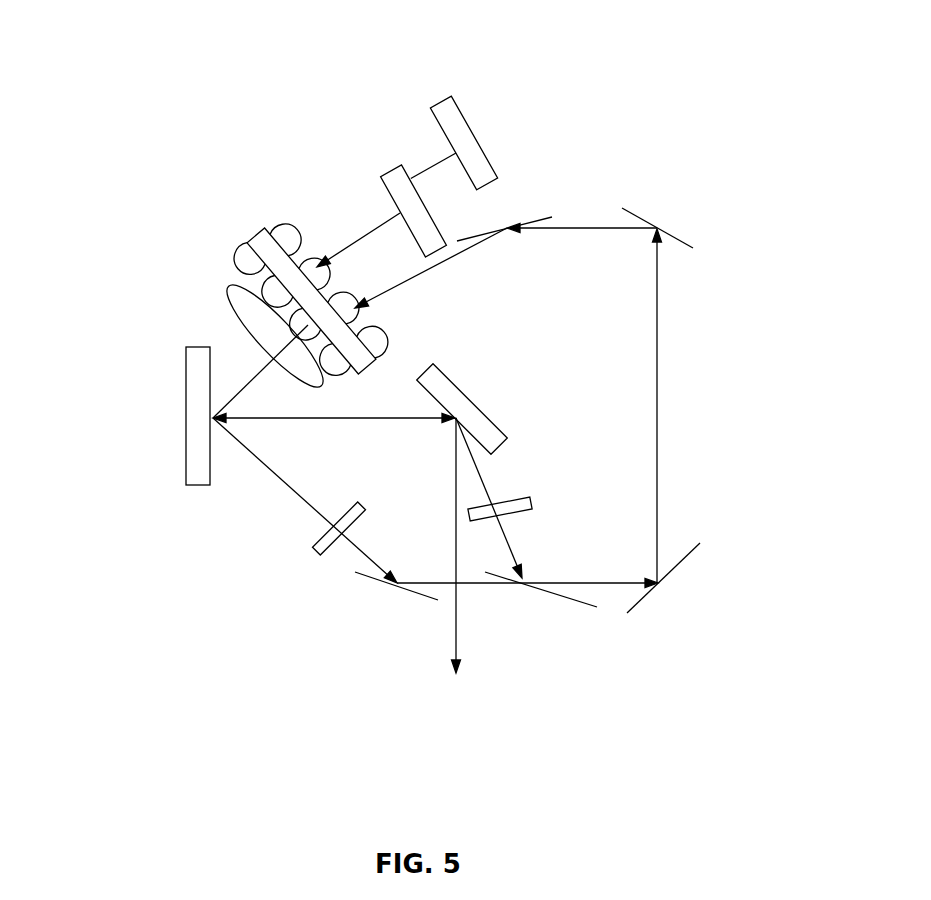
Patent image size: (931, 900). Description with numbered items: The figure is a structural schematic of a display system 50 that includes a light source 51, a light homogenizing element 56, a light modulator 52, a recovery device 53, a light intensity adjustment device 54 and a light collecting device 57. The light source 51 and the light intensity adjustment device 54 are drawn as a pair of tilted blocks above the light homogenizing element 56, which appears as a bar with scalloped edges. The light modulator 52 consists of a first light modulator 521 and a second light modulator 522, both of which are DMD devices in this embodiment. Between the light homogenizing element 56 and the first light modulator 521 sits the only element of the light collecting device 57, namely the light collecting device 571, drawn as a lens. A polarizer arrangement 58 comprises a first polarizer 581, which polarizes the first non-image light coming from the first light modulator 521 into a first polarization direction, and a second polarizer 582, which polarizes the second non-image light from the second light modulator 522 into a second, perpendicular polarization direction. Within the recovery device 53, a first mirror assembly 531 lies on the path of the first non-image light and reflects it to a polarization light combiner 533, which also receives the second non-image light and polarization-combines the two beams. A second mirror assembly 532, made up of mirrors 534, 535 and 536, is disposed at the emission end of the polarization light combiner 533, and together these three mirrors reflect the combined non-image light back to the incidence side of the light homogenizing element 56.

The display system 50 is at (447, 45).
The light source 51 is at (393, 170).
The light modulator 52 is at (95, 332).
The recovery device 53 is at (310, 645).
The light intensity adjustment device 54 is at (443, 100).
The light homogenizing element 56 is at (256, 240).
The light collecting device 57 is at (112, 298).
The polarizer assembly 58 is at (155, 572).
The first light modulator 521 is at (186, 388).
The second light modulator 522 is at (443, 374).
The first mirror assembly 531 is at (392, 584).
The second mirror assembly 532 is at (742, 421).
The polarization light combiner 533 is at (568, 600).
The mirror 534 is at (682, 557).
The mirror 535 is at (638, 218).
The mirror 536 is at (480, 233).
The light collecting device 571 is at (232, 322).
The first polarizer 581 is at (313, 547).
The second polarizer 582 is at (518, 495).